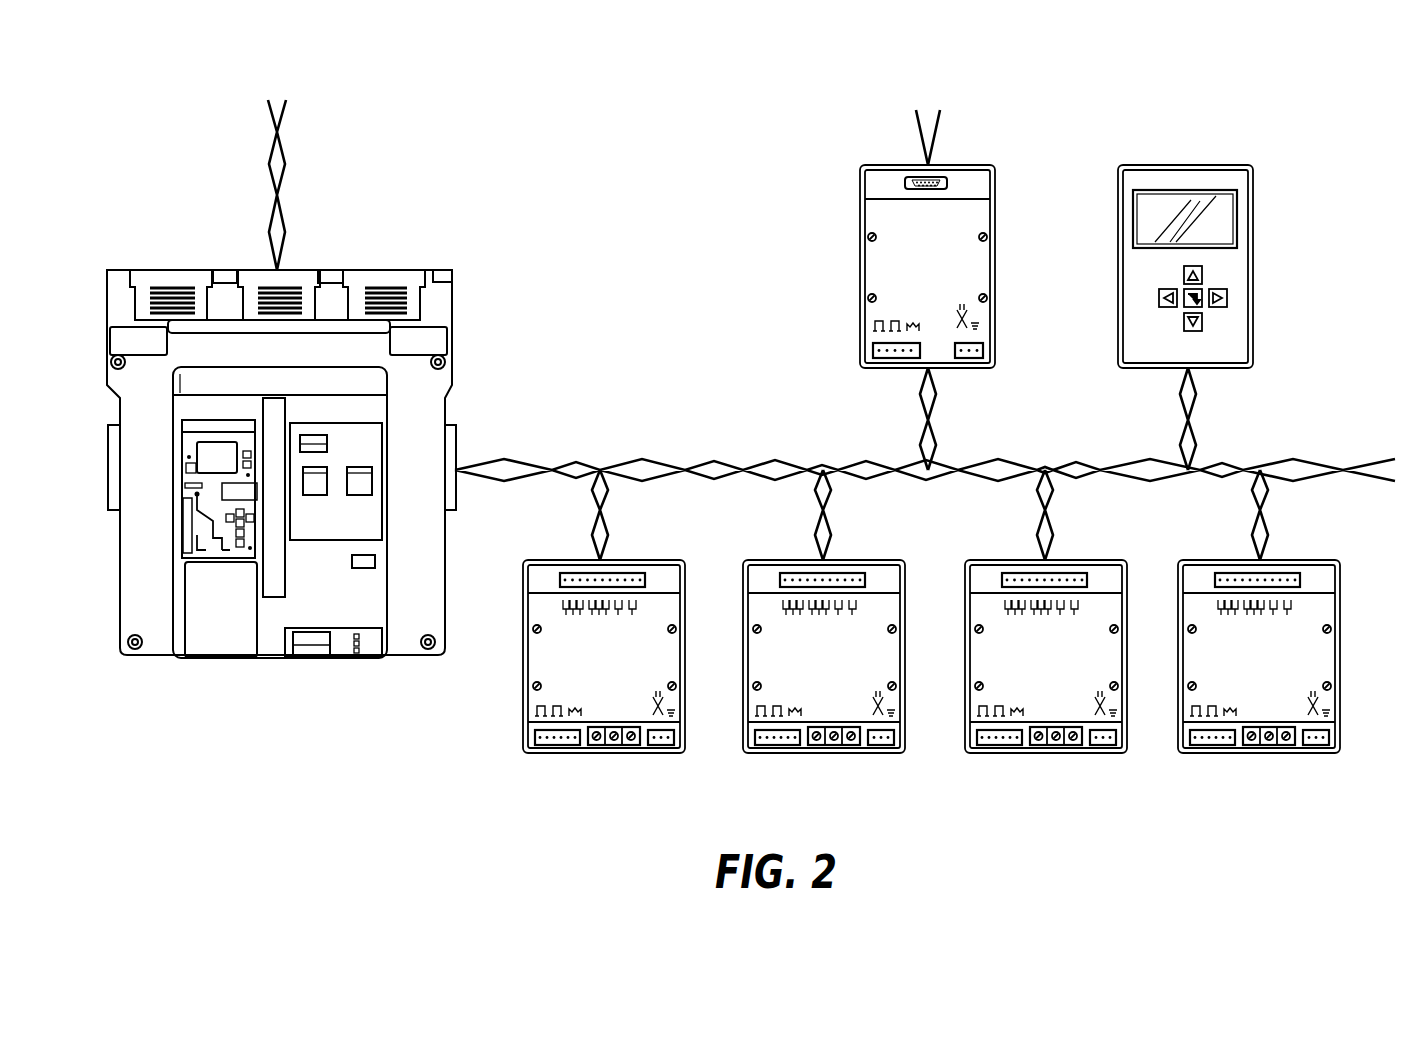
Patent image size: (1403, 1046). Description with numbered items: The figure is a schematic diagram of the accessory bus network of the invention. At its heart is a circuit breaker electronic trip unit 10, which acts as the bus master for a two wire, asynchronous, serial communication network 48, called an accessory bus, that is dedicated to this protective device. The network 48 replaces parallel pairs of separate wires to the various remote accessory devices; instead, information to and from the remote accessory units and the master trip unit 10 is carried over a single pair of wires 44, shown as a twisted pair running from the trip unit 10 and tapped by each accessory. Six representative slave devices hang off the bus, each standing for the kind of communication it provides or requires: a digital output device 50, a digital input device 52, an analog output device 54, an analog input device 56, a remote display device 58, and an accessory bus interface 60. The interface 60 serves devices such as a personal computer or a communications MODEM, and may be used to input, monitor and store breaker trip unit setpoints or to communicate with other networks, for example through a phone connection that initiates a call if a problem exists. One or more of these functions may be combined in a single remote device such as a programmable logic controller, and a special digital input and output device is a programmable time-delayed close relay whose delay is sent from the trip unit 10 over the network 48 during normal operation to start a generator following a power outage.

The electronic trip unit 10 is at (455, 244).
The pair of wires 44 is at (812, 466).
The accessory bus network 48 is at (690, 438).
The digital output device 50 is at (657, 754).
The digital input device 52 is at (877, 754).
The analog output device 54 is at (1103, 754).
The analog input device 56 is at (1320, 754).
The remote display device 58 is at (1225, 370).
The accessory bus interface 60 is at (965, 370).